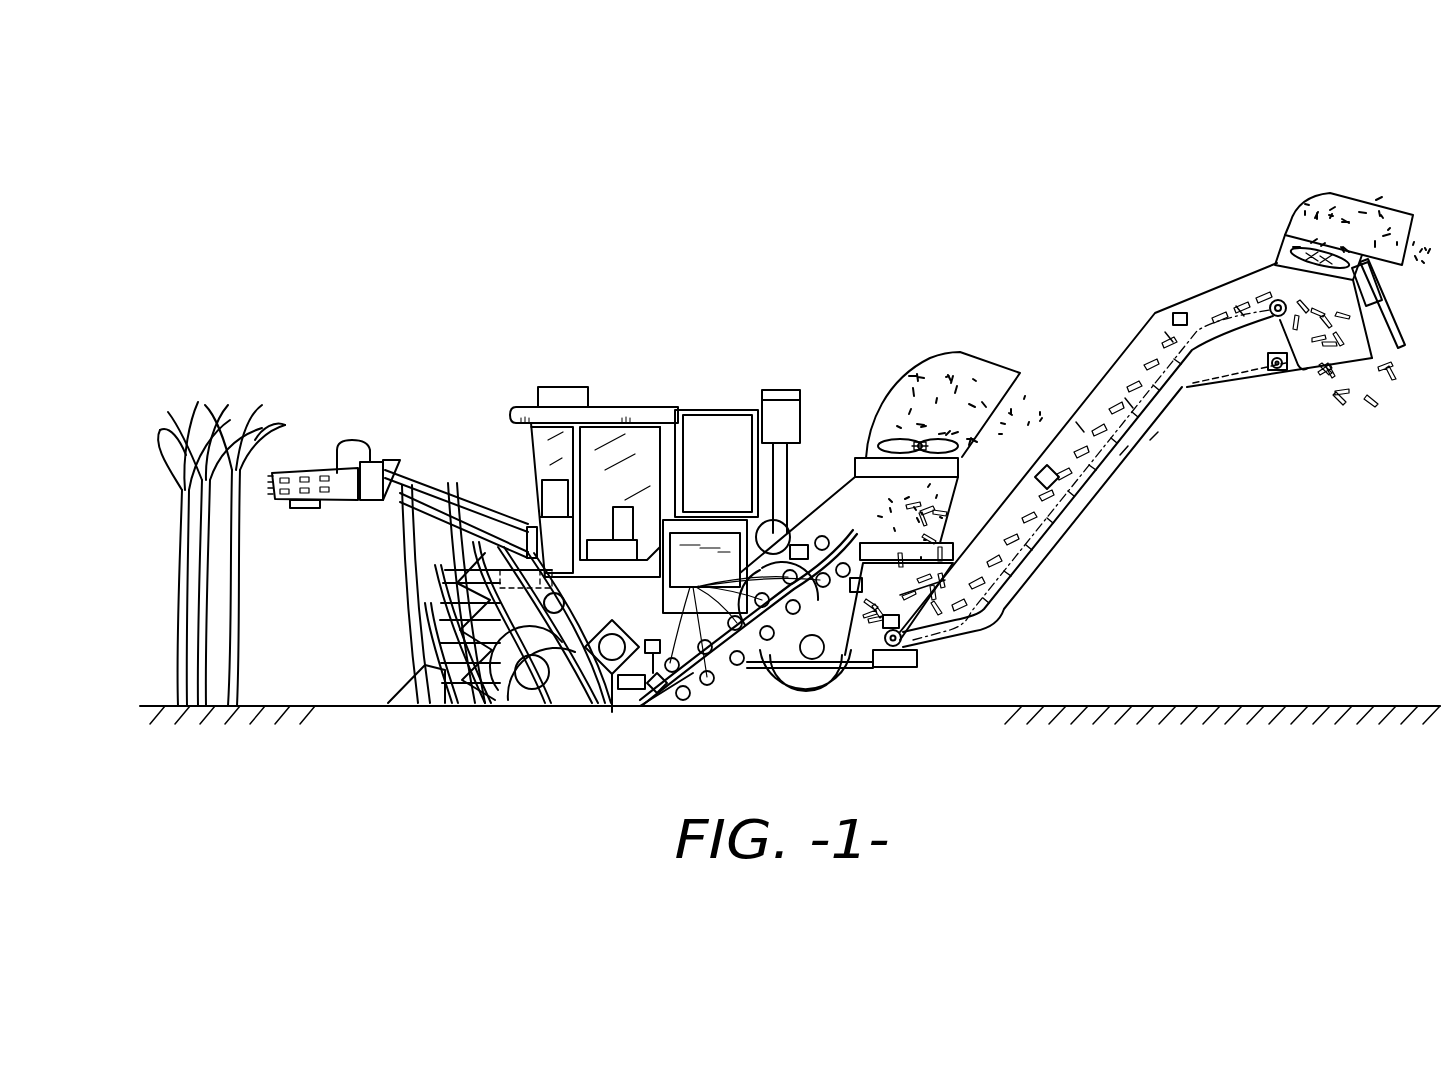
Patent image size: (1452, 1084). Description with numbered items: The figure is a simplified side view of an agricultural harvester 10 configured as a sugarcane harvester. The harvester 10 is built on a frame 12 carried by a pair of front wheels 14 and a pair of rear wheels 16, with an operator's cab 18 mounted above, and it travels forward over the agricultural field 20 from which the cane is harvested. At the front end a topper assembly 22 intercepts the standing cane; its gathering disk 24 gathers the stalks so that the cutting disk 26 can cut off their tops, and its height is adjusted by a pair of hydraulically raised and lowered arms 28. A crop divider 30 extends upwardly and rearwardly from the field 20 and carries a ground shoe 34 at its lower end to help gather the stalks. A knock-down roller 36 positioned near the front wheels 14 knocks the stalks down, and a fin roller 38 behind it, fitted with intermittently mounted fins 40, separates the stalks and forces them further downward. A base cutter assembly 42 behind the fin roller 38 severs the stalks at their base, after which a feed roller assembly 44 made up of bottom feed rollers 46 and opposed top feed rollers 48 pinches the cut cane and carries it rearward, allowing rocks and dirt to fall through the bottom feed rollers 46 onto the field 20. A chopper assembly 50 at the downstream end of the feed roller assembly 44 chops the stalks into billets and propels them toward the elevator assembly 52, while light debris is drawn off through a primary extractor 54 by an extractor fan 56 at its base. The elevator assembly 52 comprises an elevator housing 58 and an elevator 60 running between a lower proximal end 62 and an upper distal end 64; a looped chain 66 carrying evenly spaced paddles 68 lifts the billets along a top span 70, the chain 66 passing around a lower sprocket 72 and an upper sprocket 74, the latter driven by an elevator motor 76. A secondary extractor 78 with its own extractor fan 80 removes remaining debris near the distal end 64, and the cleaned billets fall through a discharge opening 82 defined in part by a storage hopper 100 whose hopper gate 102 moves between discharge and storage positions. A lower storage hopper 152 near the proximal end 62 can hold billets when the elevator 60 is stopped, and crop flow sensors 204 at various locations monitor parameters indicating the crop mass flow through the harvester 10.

The agricultural harvester 10 is at (478, 296).
The frame 12 is at (622, 628).
The front wheels 14 is at (536, 716).
The rear wheels 16 is at (828, 690).
The operator's cab 18 is at (645, 406).
The agricultural field 20 is at (300, 715).
The topper assembly 22 is at (365, 440).
The gathering disk 24 is at (283, 473).
The cutting disk 26 is at (303, 508).
The arms 28 is at (478, 503).
The crop divider 30 is at (421, 670).
The ground shoe 34 is at (400, 700).
The knock-down roller 36 is at (566, 603).
The fin roller 38 is at (617, 706).
The fins 40 is at (578, 700).
The base cutter assembly 42 is at (644, 704).
The feed roller assembly 44 is at (734, 678).
The bottom feed rollers 46 is at (703, 683).
The top feed rollers 48 is at (745, 605).
The chopper assembly 50 is at (832, 535).
The elevator assembly 52 is at (1096, 512).
The primary extractor 54 is at (935, 352).
The extractor fan 56 is at (893, 468).
The elevator housing 58 is at (1125, 460).
The elevator 60 is at (1127, 406).
The proximal end 62 is at (934, 636).
The distal end 64 is at (1260, 276).
The chain 66 is at (1155, 445).
The paddles 68 is at (1170, 338).
The top span 70 is at (1080, 427).
The lower sprocket 72 is at (895, 668).
The upper sprocket 74 is at (1238, 310).
The elevator motor 76 is at (1268, 302).
The secondary extractor 78 is at (1320, 190).
The extractor fan 80 is at (1290, 240).
The discharge opening 82 is at (1330, 370).
The storage hopper 100 is at (1352, 356).
The hopper gate 102 is at (1240, 384).
The lower storage hopper 152 is at (920, 557).
The crop flow sensors 204 is at (632, 700).